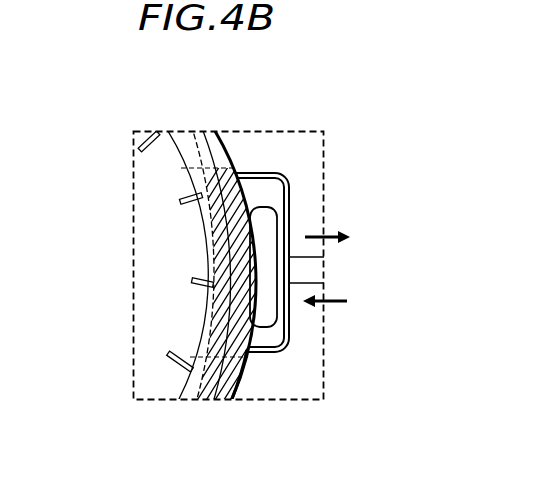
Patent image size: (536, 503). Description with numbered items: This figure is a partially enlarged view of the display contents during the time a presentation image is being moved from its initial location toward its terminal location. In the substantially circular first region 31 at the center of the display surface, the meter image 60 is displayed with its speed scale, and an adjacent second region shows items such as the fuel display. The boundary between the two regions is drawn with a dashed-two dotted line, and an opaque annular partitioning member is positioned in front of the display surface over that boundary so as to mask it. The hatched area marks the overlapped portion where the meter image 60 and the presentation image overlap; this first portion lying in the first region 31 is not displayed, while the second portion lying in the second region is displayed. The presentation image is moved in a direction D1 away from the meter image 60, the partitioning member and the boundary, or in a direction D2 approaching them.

The first region 31 is at (163, 160).
The direction D1 is at (342, 237).
The direction D2 is at (336, 301).
The meter image 60 is at (162, 382).